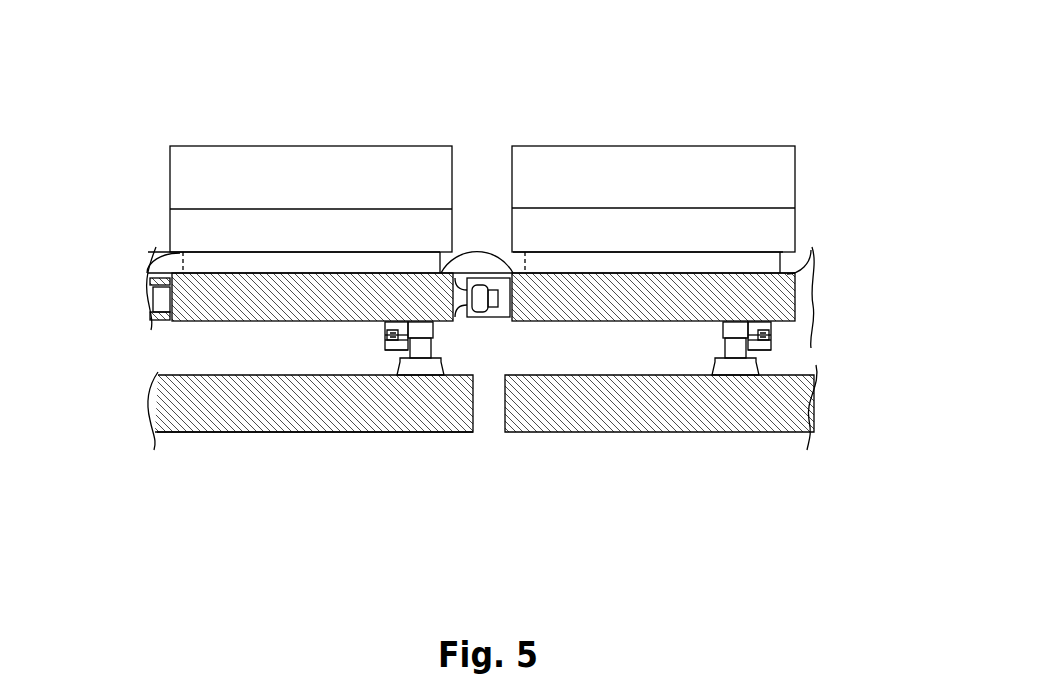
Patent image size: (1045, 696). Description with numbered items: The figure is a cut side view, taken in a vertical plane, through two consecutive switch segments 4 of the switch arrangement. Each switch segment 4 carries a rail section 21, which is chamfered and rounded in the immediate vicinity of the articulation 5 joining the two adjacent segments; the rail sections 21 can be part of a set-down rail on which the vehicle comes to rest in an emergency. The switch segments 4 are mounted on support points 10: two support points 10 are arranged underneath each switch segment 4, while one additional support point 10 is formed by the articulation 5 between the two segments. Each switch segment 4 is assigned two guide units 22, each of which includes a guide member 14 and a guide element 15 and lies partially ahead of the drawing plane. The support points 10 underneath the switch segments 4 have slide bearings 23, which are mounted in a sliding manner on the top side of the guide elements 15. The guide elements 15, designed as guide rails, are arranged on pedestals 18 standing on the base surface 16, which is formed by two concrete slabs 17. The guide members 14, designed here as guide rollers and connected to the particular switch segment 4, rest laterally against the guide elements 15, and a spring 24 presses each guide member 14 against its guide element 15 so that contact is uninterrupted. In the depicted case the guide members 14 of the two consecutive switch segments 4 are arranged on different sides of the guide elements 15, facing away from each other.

The switch segment 4 is at (307, 177).
The articulation 5 is at (481, 258).
The support point 10 is at (489, 296).
The guide member 14 is at (395, 344).
The guide element 15 is at (425, 352).
The base surface 16 is at (335, 455).
The concrete slab 17 is at (163, 405).
The pedestal 18 is at (421, 365).
The rail section 21 is at (212, 262).
The guide unit 22 is at (381, 363).
The slide bearing 23 is at (420, 328).
The spring 24 is at (393, 333).